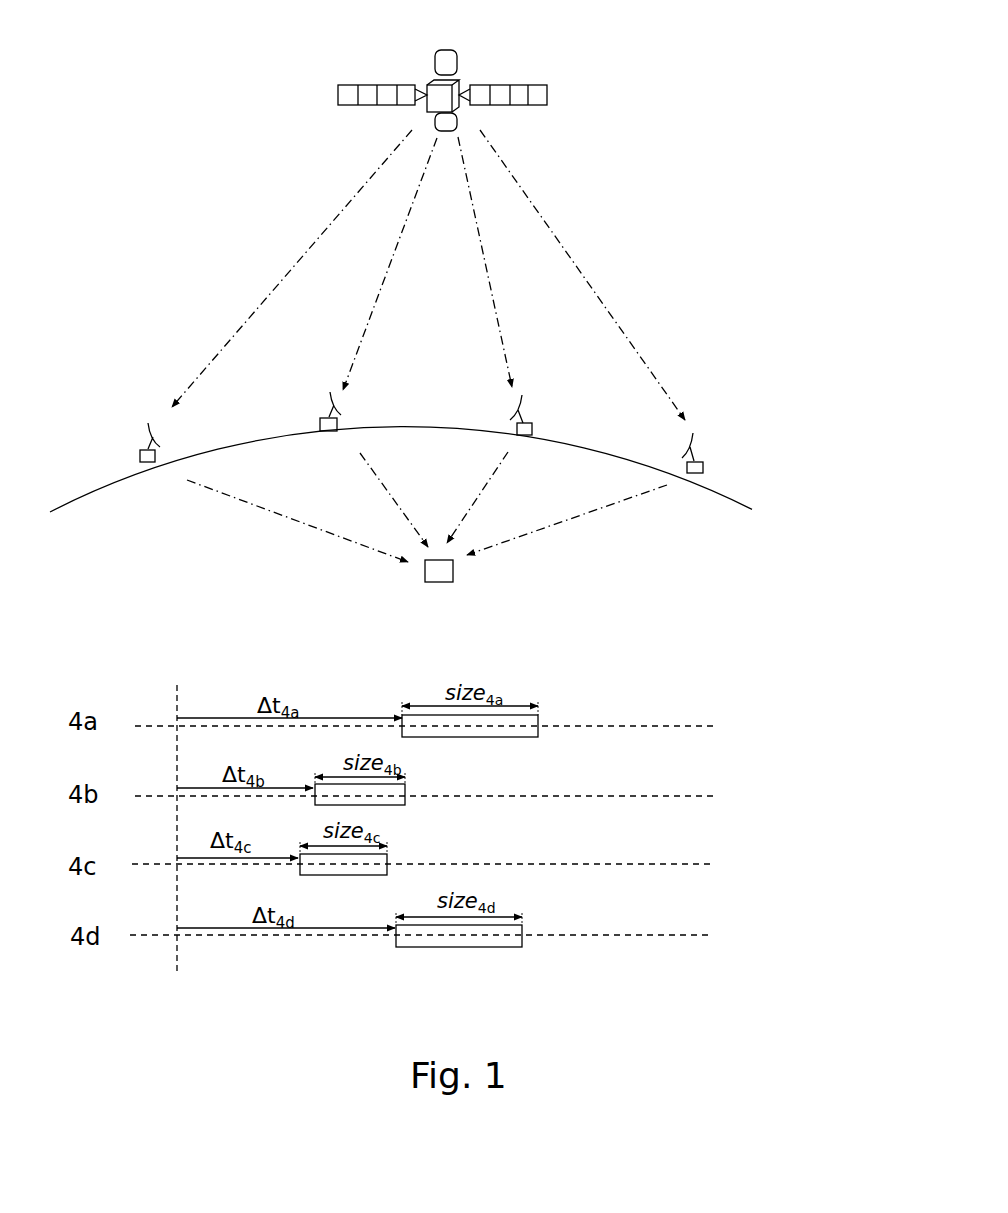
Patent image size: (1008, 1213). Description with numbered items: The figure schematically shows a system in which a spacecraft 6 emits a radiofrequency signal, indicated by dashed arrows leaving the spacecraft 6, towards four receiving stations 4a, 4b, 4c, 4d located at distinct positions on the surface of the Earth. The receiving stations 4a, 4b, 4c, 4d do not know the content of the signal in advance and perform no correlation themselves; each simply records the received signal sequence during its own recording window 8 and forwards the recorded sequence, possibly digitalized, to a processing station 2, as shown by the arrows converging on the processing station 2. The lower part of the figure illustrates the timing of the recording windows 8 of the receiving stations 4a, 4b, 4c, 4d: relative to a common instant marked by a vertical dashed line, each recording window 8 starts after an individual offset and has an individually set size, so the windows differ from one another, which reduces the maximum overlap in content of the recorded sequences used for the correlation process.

The processing station 2 is at (453, 573).
The receiving station 4a is at (150, 465).
The receiving station 4b is at (336, 433).
The receiving station 4c is at (529, 439).
The receiving station 4d is at (687, 480).
The spacecraft 6 is at (458, 83).
The recording window 8 is at (492, 737).